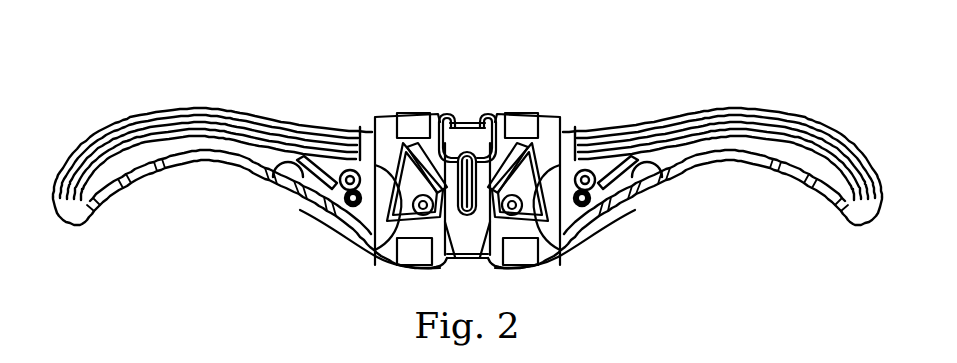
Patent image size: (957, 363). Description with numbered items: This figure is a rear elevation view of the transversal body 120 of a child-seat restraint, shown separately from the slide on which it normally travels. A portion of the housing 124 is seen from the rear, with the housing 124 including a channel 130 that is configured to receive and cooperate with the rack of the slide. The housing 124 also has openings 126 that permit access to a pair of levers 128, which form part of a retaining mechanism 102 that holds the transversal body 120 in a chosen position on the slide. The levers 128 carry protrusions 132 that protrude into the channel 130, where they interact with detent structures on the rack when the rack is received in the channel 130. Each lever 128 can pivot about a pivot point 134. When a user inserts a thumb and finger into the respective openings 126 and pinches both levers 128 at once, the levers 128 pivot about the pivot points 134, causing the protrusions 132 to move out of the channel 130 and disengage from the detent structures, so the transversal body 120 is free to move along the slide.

The retaining mechanism 102 is at (471, 168).
The transversal body 120 is at (690, 110).
The housing 124 is at (585, 230).
The openings 126 is at (385, 193).
The levers 128 is at (382, 237).
The channel 130 is at (465, 106).
The protrusions 132 is at (455, 116).
The pivot points 134 is at (457, 259).